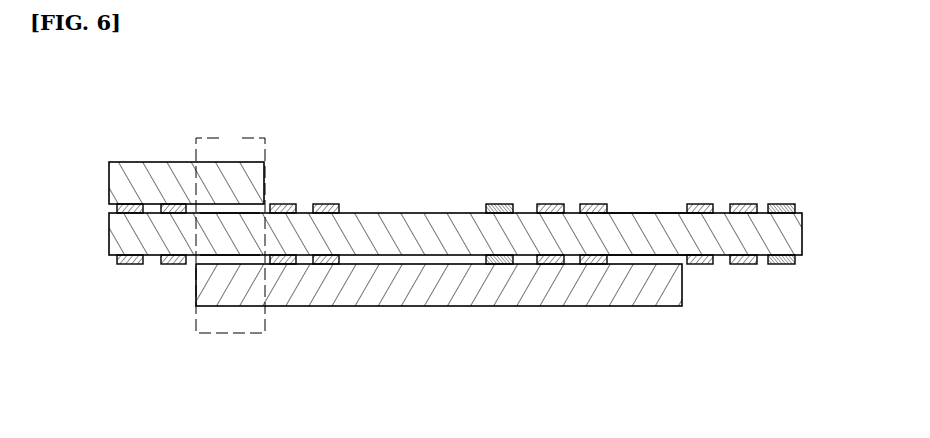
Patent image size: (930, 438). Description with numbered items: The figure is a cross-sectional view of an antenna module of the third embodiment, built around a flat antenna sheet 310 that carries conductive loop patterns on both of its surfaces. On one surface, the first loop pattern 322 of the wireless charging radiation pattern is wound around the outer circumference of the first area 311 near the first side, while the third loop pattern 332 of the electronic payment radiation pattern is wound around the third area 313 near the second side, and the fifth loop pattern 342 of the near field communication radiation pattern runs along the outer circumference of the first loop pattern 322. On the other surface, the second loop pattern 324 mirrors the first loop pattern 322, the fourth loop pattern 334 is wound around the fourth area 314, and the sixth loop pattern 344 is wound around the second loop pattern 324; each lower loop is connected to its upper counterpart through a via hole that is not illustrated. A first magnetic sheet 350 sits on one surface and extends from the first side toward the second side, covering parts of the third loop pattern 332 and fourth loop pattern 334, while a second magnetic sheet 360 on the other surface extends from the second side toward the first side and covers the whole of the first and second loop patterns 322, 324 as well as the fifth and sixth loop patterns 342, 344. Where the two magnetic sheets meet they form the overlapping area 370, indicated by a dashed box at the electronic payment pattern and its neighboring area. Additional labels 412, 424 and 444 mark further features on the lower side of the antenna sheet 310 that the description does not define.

The antenna sheet 310 is at (109, 231).
The first area 311 is at (652, 213).
The third area 313 is at (240, 206).
The fourth area 314 is at (232, 256).
The first loop pattern 322 is at (550, 204).
The second loop pattern 324 is at (744, 264).
The third loop pattern 332 is at (178, 204).
The fourth loop pattern 334 is at (172, 264).
The fifth loop pattern 342 is at (498, 204).
The sixth loop pattern 344 is at (782, 264).
The first magnetic sheet 350 is at (109, 181).
The second magnetic sheet 360 is at (478, 306).
The overlapping area 370 is at (229, 138).
The second surface of substrate 412 is at (652, 256).
The lower connection pads 424 is at (593, 264).
The lower dummy pad 444 is at (497, 264).